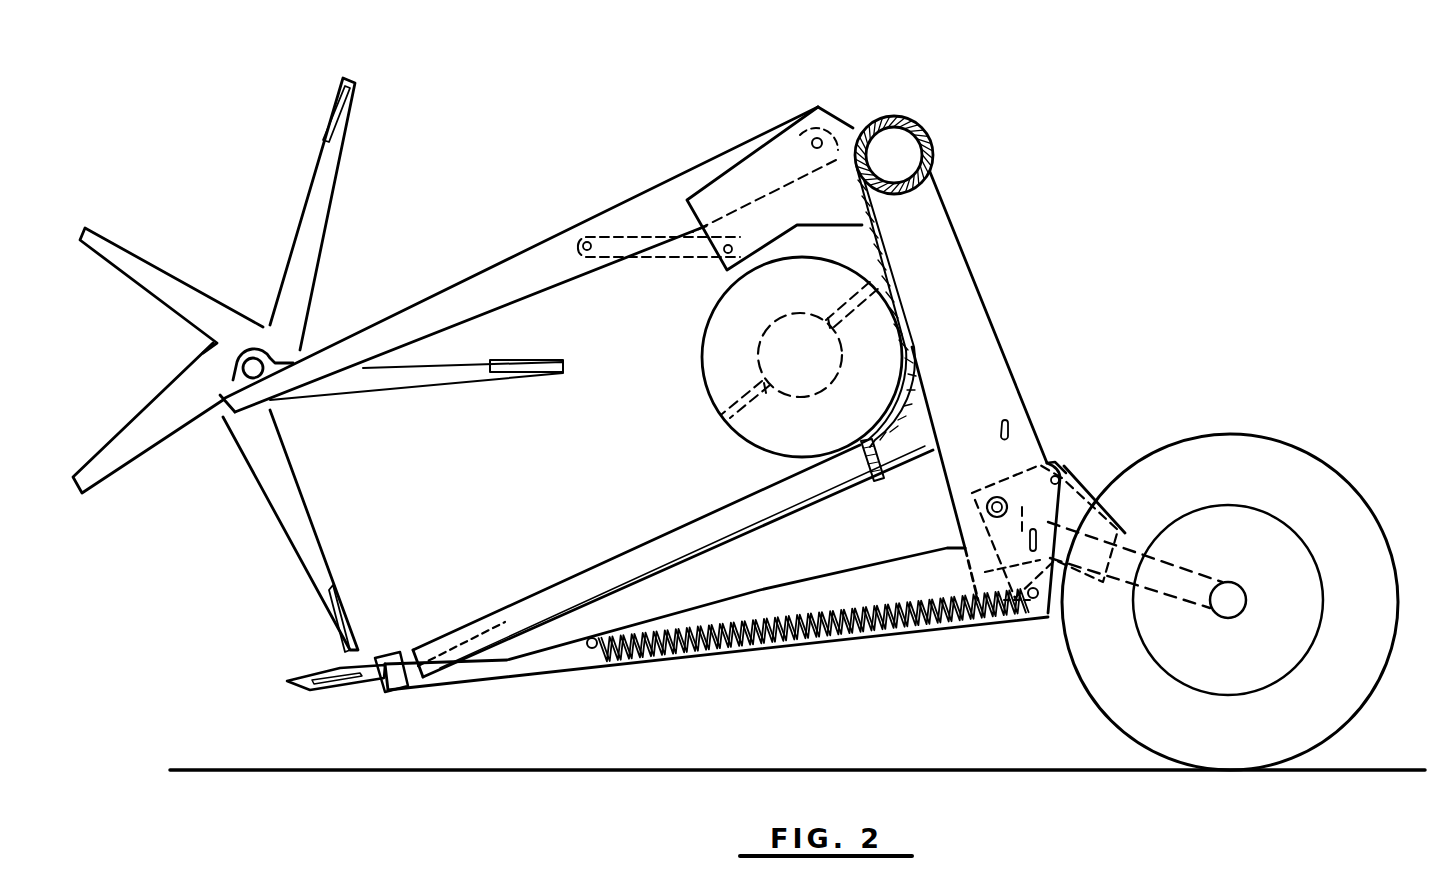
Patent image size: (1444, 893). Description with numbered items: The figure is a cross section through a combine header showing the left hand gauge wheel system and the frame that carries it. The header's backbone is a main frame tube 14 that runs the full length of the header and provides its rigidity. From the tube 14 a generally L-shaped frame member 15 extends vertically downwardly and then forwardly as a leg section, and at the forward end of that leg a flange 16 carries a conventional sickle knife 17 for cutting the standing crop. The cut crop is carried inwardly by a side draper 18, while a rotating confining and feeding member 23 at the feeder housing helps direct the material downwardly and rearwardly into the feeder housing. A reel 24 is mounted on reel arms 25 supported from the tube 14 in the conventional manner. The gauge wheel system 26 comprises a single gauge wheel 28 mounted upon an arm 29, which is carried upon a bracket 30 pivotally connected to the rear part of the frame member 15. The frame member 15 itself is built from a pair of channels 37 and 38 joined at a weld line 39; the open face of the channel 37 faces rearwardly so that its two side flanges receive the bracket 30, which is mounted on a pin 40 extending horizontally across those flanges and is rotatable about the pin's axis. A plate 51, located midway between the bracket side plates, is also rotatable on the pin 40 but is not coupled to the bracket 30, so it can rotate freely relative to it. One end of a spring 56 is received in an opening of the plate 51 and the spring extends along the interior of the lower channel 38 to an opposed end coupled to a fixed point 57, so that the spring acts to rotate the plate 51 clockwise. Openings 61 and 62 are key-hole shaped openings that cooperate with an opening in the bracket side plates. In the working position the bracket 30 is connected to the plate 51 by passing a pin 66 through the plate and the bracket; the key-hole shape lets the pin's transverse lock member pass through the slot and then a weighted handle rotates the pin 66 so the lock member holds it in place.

The main frame tube 14 is at (898, 104).
The L-shaped frame member 15 is at (975, 389).
The flange 16 is at (372, 682).
The sickle knife 17 is at (292, 667).
The side draper 18 is at (577, 568).
The rotating confining and feeding member 23 is at (716, 318).
The reel 24 is at (258, 215).
The reel arm 25 is at (478, 275).
The left hand gauge wheel system 26 is at (1300, 438).
The gauge wheel 28 is at (1342, 523).
The arm 29 is at (1175, 568).
The bracket 30 is at (1057, 438).
The channel 37 is at (955, 285).
The channel 38 is at (765, 646).
The weld line 39 is at (965, 556).
The pin 40 is at (988, 505).
The plate 51 is at (985, 573).
The spring 56 is at (806, 598).
The fixed point 57 is at (590, 650).
The opening 61 is at (1000, 430).
The opening 62 is at (1066, 586).
The pin 66 is at (1070, 468).